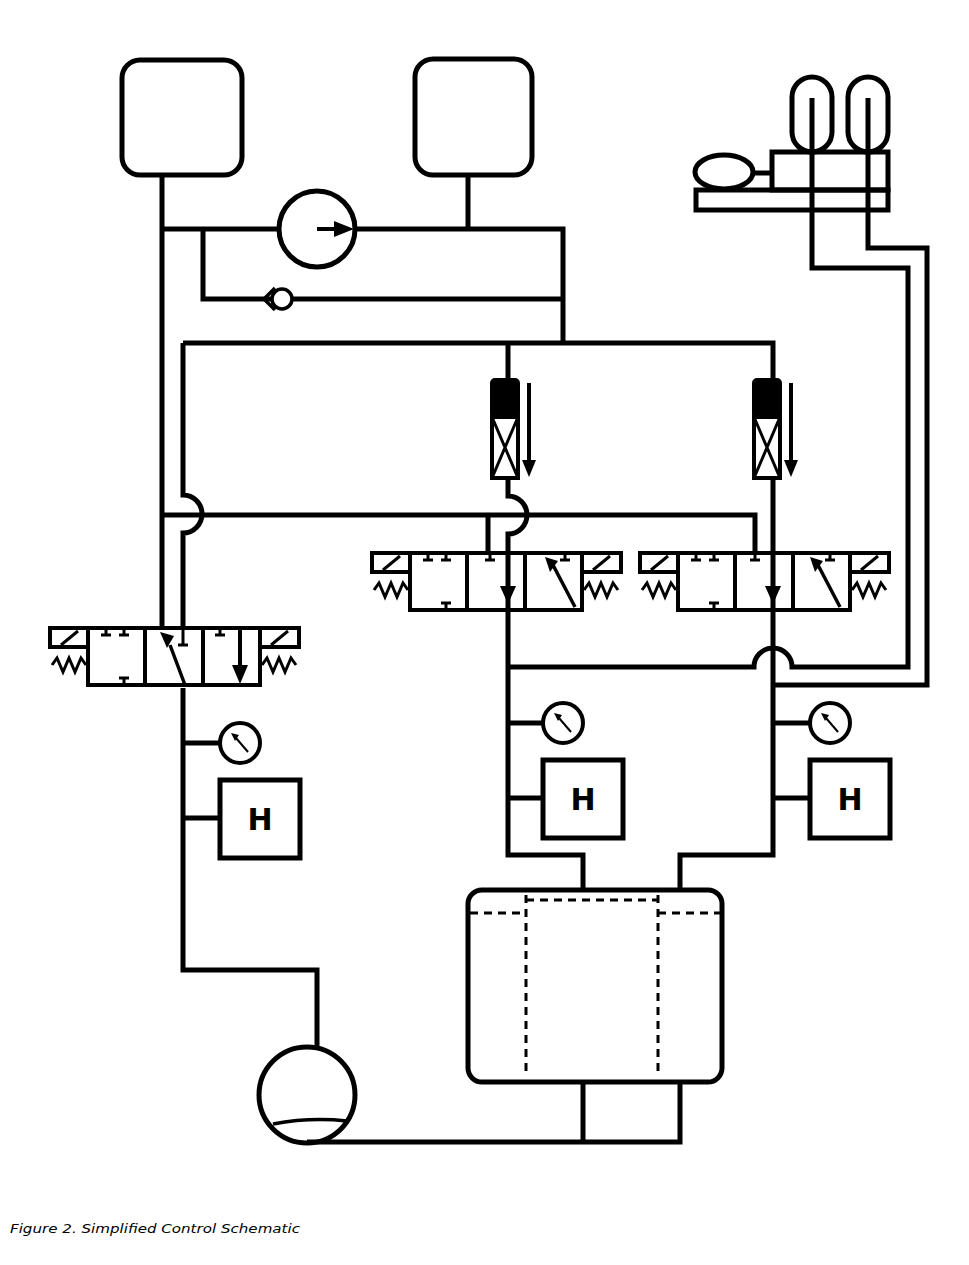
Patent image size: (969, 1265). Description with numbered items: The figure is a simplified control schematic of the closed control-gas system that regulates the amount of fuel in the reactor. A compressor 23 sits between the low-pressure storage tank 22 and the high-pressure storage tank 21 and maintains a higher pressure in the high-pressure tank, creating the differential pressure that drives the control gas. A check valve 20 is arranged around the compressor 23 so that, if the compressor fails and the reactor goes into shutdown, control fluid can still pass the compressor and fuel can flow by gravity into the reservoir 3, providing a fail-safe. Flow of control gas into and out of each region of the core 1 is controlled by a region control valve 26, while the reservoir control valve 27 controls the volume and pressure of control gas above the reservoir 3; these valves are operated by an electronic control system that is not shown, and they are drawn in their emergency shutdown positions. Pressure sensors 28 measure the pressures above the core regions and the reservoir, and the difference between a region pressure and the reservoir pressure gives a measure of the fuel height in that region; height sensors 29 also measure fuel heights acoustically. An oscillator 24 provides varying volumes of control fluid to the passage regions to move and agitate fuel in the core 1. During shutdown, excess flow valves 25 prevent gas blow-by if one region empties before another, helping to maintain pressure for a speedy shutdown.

The core 1 is at (638, 986).
The reservoir 3 is at (245, 1095).
The check valve 20 is at (296, 311).
The high-pressure storage tank 21 is at (488, 91).
The low-pressure storage tank 22 is at (206, 91).
The compressor 23 is at (320, 219).
The oscillator 24 is at (772, 162).
The excess flow valves 25 is at (645, 429).
The region control valve 26 is at (527, 612).
The reservoir control valve 27 is at (205, 623).
The pressure sensors 28 is at (273, 743).
The height sensors 29 is at (310, 813).